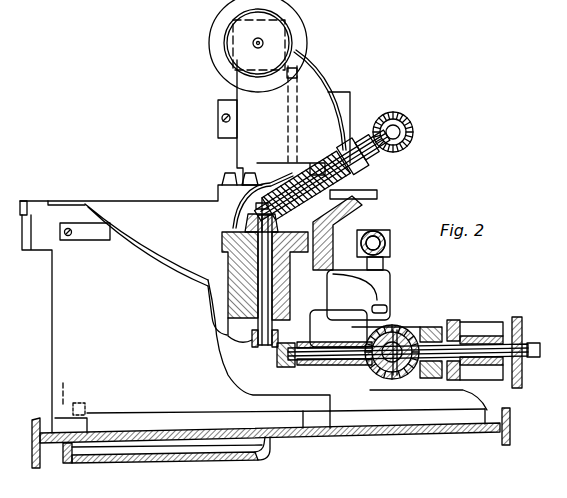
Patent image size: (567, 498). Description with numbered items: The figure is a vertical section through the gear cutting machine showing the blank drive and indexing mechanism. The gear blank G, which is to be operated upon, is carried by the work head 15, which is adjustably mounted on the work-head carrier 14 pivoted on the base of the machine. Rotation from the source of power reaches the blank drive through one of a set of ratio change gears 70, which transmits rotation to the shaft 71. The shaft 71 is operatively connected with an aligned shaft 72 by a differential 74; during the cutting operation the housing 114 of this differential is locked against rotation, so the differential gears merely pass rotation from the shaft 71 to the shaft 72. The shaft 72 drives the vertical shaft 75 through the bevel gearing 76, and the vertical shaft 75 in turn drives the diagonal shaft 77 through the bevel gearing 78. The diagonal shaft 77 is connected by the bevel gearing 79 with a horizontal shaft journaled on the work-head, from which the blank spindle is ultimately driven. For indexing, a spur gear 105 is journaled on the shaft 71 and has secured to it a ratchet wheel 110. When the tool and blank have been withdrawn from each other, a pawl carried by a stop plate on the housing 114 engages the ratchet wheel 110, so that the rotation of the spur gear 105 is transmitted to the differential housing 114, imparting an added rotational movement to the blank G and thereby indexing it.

The gear blank G is at (302, 30).
The work head 15 is at (237, 153).
The diagonal shaft 77 is at (372, 173).
The bevel gearing 79 is at (412, 138).
The work-head carrier 14 is at (378, 197).
The bevel gearing 78 is at (245, 219).
The vertical shaft 75 is at (228, 267).
The shaft 71 is at (482, 345).
The bevel gearing 76 is at (278, 353).
The aligned shaft 72 is at (327, 346).
The differential 74 is at (401, 333).
The housing of the differential 114 is at (396, 330).
The ratchet wheel 110 is at (430, 327).
The spur gear 105 is at (455, 322).
The ratio change gears 70 is at (524, 381).